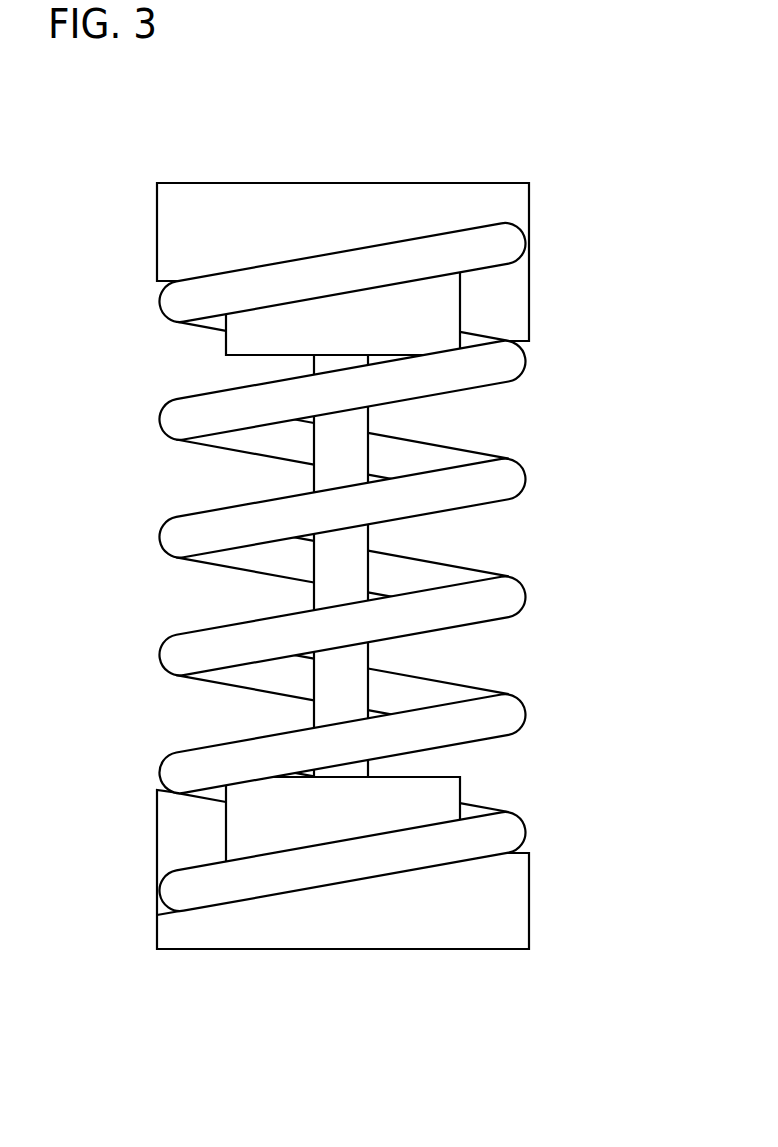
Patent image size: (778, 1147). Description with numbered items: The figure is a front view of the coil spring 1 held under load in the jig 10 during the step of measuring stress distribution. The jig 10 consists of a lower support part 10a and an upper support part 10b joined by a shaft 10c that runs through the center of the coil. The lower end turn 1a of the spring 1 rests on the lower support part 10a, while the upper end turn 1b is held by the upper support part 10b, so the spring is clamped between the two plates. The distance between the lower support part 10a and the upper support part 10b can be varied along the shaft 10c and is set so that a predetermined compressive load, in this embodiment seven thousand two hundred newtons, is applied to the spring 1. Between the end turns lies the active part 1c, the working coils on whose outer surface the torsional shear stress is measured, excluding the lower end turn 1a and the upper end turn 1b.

The jig 10 is at (416, 534).
The lower support part 10a is at (516, 895).
The upper support part 10b is at (531, 222).
The shaft 10c is at (352, 541).
The coil spring 1 is at (399, 567).
The lower end turn 1a is at (508, 828).
The upper end turn 1b is at (513, 242).
The active part 1c is at (512, 596).